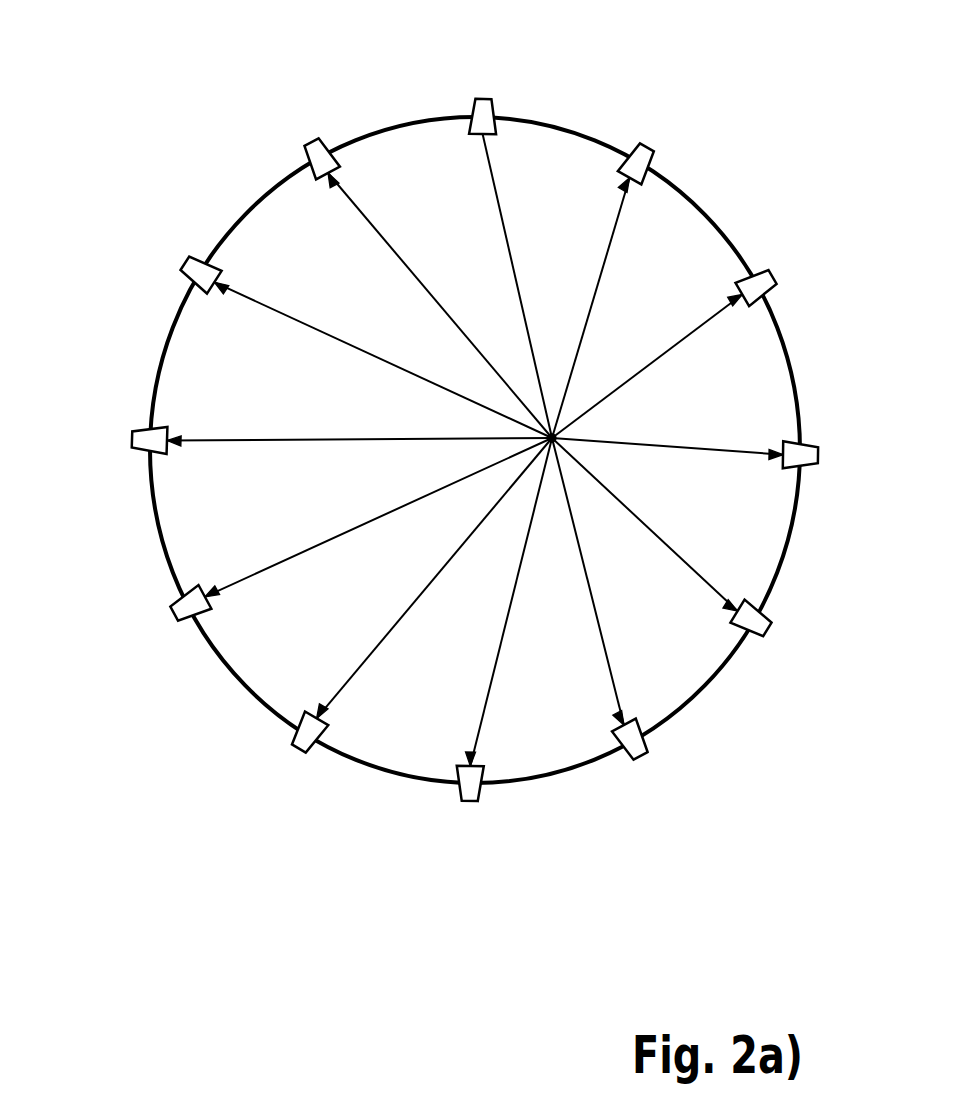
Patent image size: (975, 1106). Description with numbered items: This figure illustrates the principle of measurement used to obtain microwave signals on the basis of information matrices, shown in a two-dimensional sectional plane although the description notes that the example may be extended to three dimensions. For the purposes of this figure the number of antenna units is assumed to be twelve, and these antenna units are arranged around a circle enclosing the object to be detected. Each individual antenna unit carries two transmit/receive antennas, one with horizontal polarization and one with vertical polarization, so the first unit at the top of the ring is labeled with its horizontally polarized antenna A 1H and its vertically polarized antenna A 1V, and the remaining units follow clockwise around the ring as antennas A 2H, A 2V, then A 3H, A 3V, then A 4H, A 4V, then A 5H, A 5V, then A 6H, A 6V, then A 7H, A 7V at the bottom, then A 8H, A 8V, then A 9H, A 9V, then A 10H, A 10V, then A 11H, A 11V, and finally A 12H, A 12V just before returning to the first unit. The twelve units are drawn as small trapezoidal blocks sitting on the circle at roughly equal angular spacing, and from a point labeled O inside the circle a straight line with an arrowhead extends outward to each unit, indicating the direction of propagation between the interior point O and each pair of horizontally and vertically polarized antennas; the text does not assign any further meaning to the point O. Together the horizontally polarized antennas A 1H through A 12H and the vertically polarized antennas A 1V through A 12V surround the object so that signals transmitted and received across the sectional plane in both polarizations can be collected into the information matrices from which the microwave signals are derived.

The origin / center point O is at (576, 441).
The transmit/receive antenna with horizontal polarization A 1H is at (504, 228).
The transmit/receive antenna with vertical polarization A 1V is at (504, 228).
The transmit/receive antenna with horizontal polarization A 2H is at (627, 253).
The transmit/receive antenna with vertical polarization A 2V is at (627, 253).
The transmit/receive antenna with horizontal polarization A 3H is at (702, 314).
The transmit/receive antenna with vertical polarization A 3V is at (702, 314).
The transmit/receive antenna with horizontal polarization A 4H is at (740, 450).
The transmit/receive antenna with vertical polarization A 4V is at (740, 450).
The transmit/receive antenna with horizontal polarization A 5H is at (719, 558).
The transmit/receive antenna with vertical polarization A 5V is at (719, 558).
The transmit/receive antenna with horizontal polarization A 6H is at (656, 630).
The transmit/receive antenna with vertical polarization A 6V is at (656, 630).
The transmit/receive antenna with horizontal polarization A 7H is at (496, 660).
The transmit/receive antenna with vertical polarization A 7V is at (496, 660).
The transmit/receive antenna with horizontal polarization A 8H is at (404, 633).
The transmit/receive antenna with vertical polarization A 8V is at (404, 633).
The transmit/receive antenna with horizontal polarization A 9H is at (305, 546).
The transmit/receive antenna with vertical polarization A 9V is at (305, 546).
The transmit/receive antenna with horizontal polarization A 10H is at (284, 434).
The transmit/receive antenna with vertical polarization A 10V is at (284, 434).
The transmit/receive antenna with horizontal polarization A 11H is at (308, 331).
The transmit/receive antenna with vertical polarization A 11V is at (308, 331).
The transmit/receive antenna with horizontal polarization A 12H is at (370, 263).
The transmit/receive antenna with vertical polarization A 12V is at (370, 263).